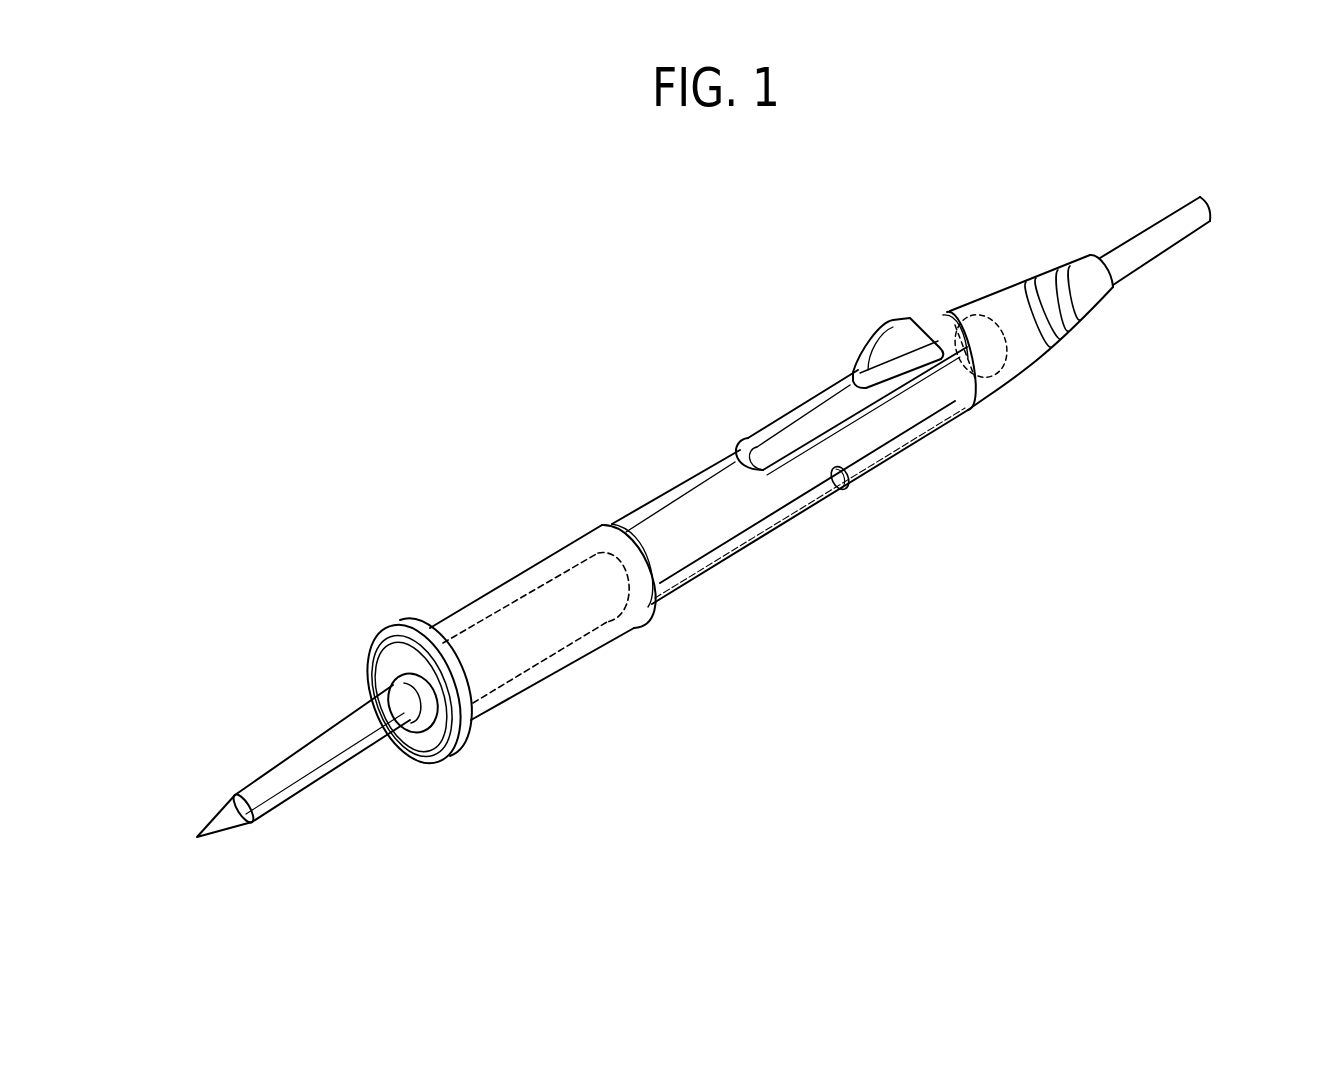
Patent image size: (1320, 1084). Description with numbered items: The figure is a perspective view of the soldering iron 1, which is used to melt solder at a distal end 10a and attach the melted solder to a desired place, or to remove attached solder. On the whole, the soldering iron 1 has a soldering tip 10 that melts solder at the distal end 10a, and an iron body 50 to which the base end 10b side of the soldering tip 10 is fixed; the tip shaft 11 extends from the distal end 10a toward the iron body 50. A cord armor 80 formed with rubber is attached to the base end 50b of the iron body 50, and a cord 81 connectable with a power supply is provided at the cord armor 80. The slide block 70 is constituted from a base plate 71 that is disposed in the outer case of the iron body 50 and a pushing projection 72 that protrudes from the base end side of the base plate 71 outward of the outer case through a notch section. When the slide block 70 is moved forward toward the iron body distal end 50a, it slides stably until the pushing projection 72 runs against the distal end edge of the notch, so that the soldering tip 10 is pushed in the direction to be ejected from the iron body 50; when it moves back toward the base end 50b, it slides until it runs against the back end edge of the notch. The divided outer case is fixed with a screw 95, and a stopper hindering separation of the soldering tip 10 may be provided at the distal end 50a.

The soldering iron 1 is at (695, 774).
The soldering tip 10 is at (293, 747).
The distal end 10a is at (215, 838).
The base end 10b is at (600, 627).
The tip rod 11 is at (333, 757).
The iron body 50 is at (560, 520).
The distal end 50a is at (763, 540).
The base end 50b is at (975, 380).
The slide block 70 is at (747, 408).
The base plate 71 is at (753, 450).
The pushing projection 72 is at (873, 353).
The cord armor 80 is at (1072, 330).
The cord 81 is at (1118, 250).
The screw 95 is at (843, 490).